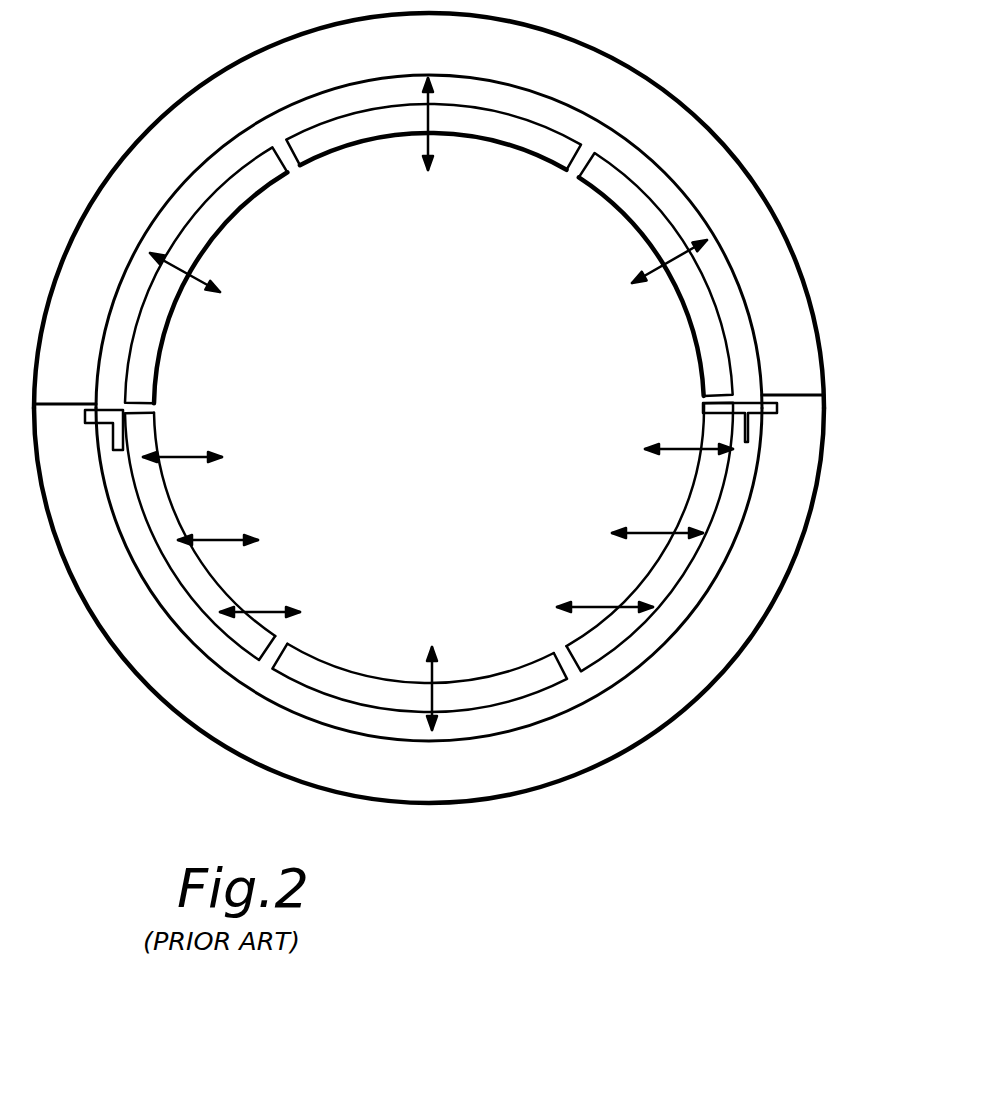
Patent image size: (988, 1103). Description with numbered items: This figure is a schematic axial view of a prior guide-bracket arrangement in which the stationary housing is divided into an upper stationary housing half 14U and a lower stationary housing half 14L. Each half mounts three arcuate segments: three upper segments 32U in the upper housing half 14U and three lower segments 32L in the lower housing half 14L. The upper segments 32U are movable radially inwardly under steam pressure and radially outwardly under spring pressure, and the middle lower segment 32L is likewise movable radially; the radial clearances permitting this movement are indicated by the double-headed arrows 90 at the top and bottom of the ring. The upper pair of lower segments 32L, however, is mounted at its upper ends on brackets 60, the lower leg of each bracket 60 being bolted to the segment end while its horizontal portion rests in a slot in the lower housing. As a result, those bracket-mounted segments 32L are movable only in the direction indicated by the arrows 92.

The upper stationary housing half 14U is at (106, 190).
The lower stationary housing half 14L is at (150, 677).
The upper segments 32U is at (170, 306).
The lower segments 32L is at (163, 486).
The radial clearance 90 is at (432, 145).
The arrows 92 is at (698, 447).
The bracket 60 is at (748, 409).